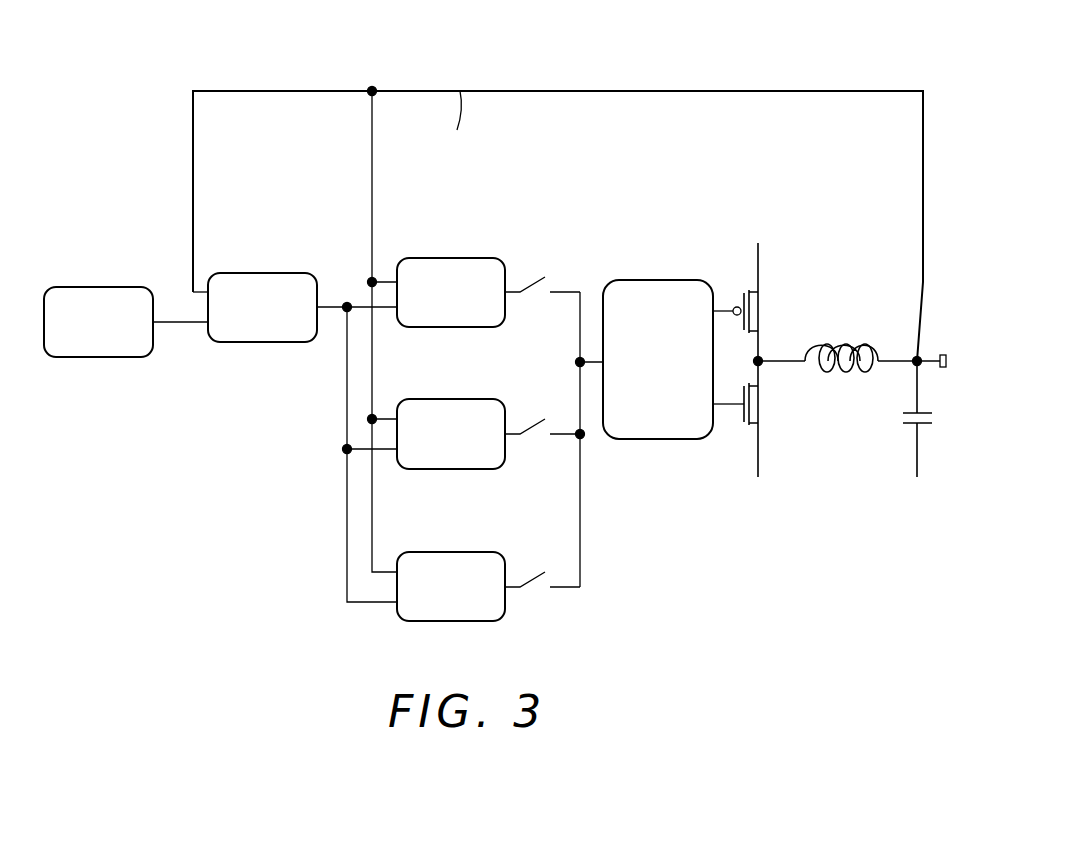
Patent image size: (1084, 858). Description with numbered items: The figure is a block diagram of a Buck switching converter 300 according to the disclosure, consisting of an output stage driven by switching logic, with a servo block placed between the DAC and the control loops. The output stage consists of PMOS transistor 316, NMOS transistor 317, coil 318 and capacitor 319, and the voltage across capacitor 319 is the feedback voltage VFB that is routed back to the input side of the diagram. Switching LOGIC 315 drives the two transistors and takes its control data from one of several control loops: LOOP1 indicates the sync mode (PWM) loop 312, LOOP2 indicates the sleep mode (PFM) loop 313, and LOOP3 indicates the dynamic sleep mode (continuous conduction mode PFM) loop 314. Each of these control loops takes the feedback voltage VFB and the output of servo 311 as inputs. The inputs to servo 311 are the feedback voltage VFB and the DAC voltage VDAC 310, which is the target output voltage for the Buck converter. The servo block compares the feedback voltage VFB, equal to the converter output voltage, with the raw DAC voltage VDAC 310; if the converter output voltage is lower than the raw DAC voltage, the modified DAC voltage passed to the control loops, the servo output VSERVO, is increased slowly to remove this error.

The voltage regulator system 300 is at (298, 52).
The DAC voltage VDAC 310 is at (97, 286).
The servo 311 is at (260, 272).
The sync mode (PWM) control loop 312 is at (452, 257).
The sleep mode (PFM) control loop 313 is at (448, 398).
The dynamic sleep mode control loop 314 is at (443, 552).
The switching LOGIC 315 is at (655, 280).
The PMOS transistor 316 is at (783, 298).
The NMOS transistor 317 is at (780, 418).
The coil 318 is at (823, 338).
The capacitor 319 is at (937, 421).